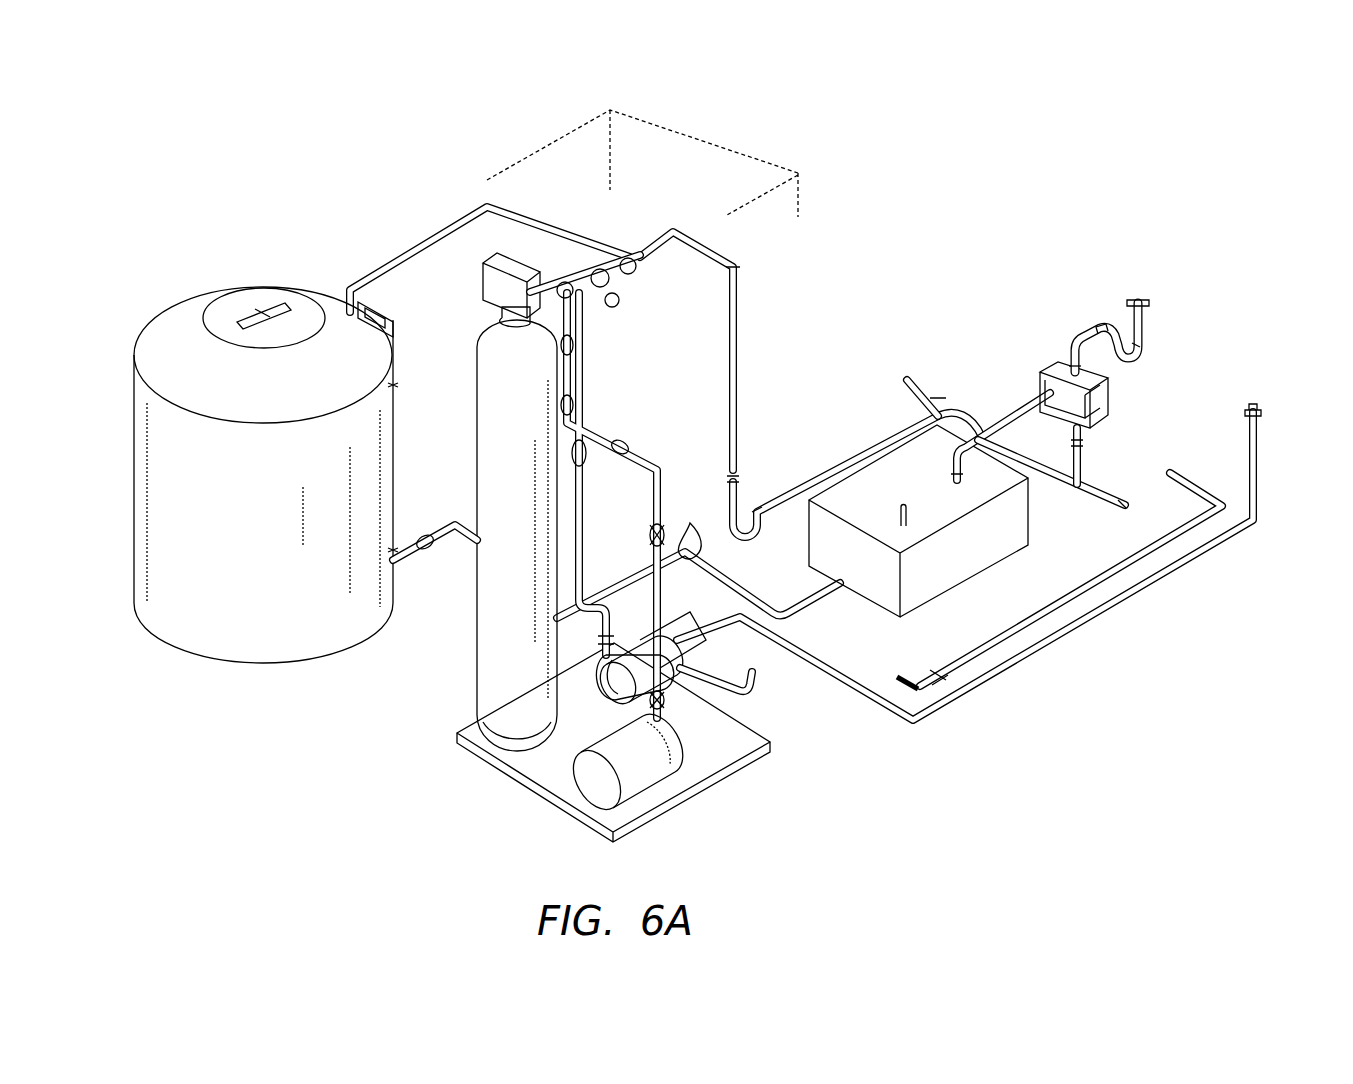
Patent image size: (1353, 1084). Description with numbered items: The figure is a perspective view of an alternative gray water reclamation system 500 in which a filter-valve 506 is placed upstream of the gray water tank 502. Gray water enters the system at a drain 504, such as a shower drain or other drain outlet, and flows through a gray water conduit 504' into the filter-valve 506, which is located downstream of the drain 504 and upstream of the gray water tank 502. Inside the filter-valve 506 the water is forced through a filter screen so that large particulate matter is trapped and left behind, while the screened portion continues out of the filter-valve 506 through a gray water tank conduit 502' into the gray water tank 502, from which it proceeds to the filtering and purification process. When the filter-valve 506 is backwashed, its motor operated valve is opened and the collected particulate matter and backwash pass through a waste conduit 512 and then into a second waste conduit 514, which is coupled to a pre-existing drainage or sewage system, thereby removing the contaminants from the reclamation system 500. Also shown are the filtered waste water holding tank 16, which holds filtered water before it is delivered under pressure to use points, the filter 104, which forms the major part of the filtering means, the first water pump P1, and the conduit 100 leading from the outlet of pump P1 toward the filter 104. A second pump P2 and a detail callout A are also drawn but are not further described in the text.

The gray water reclamation system 500 is at (873, 227).
The filtered waste water holding tank 16 is at (215, 637).
The filter 104 is at (493, 632).
The conduit 100 is at (585, 363).
The first water pump P1 is at (683, 700).
The pump motor P2 is at (680, 765).
The gray water tank 502 is at (929, 443).
The gray water tank conduit 502' is at (1051, 358).
The drain 504 is at (1152, 285).
The gray water conduit 504' is at (1189, 302).
The filter-valve 506 is at (1085, 402).
The waste conduit 512 is at (1090, 446).
The second waste conduit 514 is at (1085, 437).
The detail callout A is at (689, 541).